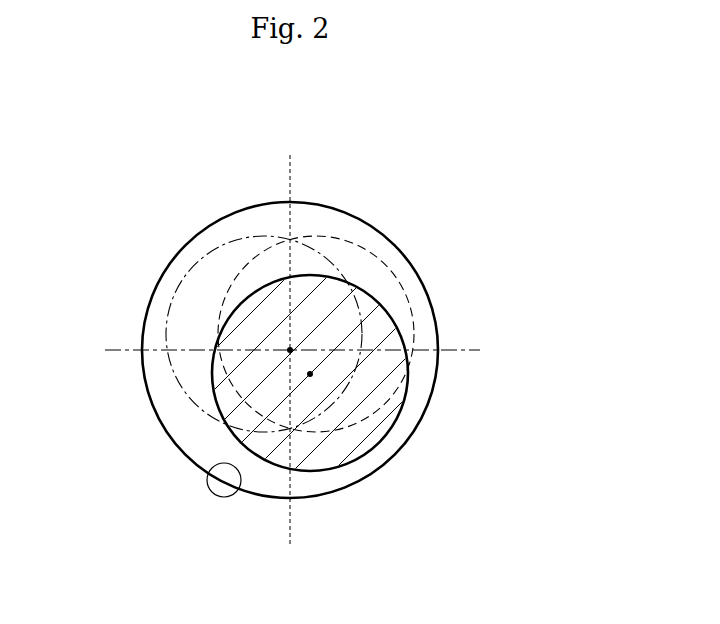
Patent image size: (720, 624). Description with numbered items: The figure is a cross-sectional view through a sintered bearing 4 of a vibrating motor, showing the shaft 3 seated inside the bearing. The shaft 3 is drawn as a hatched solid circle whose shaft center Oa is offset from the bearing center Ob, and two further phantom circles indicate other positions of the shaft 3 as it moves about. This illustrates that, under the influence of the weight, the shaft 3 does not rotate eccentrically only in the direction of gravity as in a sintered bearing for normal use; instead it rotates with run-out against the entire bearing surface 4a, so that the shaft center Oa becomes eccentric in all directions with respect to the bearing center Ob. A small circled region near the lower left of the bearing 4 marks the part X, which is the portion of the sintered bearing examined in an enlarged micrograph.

The shaft 3 is at (185, 310).
The sintered bearing 4 is at (145, 255).
The bearing surface 4a is at (310, 205).
The shaft center Oa is at (310, 374).
The bearing center Ob is at (290, 350).
The part X is at (208, 493).